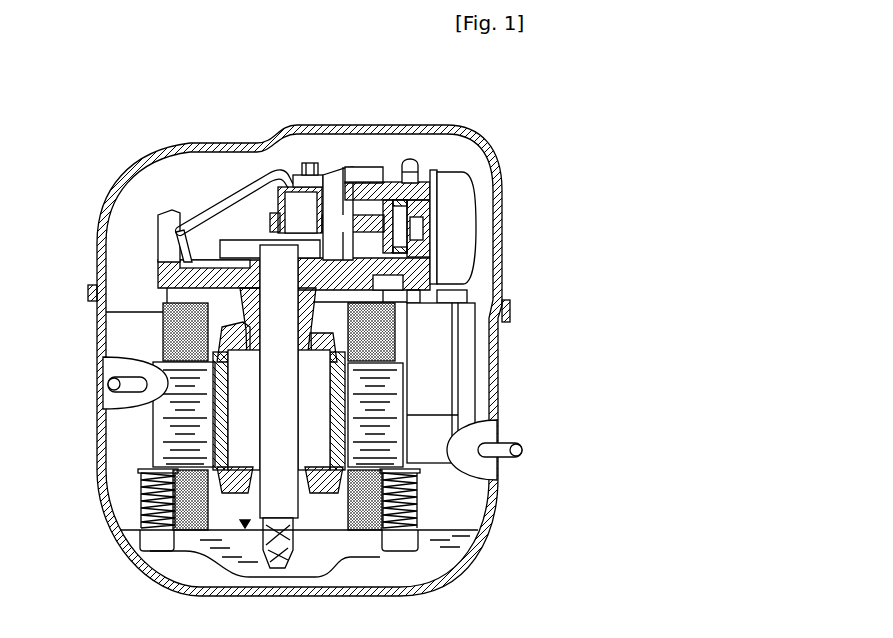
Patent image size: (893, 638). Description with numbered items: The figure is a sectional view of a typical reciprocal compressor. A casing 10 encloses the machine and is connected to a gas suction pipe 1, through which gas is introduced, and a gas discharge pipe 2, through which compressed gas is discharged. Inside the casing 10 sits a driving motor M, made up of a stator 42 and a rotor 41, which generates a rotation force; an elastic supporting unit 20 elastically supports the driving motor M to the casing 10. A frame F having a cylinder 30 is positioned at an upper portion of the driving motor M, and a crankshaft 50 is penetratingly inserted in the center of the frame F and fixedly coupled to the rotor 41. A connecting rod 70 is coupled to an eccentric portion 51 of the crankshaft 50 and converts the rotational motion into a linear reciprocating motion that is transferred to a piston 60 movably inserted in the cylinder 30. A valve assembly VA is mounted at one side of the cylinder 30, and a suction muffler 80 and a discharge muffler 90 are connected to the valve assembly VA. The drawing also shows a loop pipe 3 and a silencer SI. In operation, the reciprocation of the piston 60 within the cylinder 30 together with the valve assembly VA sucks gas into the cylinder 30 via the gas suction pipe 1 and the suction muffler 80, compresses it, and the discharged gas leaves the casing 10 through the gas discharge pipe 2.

The casing 10 is at (494, 133).
The discharge muffler 90 is at (476, 184).
The suction muffler 80 is at (477, 360).
The gas suction pipe 1 is at (523, 450).
The gas discharge pipe 2 is at (106, 385).
The crankshaft 50 is at (191, 477).
The driving motor M is at (224, 460).
The elastic supporting unit 20 is at (140, 498).
The stator 42 is at (192, 456).
The rotor 41 is at (219, 472).
The frame F is at (154, 256).
The eccentric portion 51 is at (268, 212).
The loop pipe 3 is at (253, 200).
The silencer SI is at (303, 175).
The connecting rod 70 is at (336, 206).
The cylinder 30 is at (378, 186).
The piston 60 is at (420, 192).
The valve assembly VA is at (436, 164).